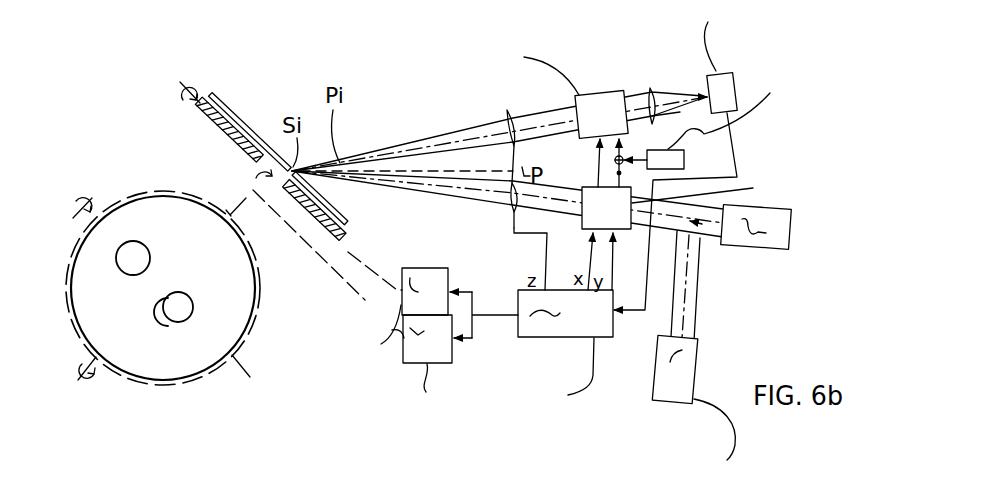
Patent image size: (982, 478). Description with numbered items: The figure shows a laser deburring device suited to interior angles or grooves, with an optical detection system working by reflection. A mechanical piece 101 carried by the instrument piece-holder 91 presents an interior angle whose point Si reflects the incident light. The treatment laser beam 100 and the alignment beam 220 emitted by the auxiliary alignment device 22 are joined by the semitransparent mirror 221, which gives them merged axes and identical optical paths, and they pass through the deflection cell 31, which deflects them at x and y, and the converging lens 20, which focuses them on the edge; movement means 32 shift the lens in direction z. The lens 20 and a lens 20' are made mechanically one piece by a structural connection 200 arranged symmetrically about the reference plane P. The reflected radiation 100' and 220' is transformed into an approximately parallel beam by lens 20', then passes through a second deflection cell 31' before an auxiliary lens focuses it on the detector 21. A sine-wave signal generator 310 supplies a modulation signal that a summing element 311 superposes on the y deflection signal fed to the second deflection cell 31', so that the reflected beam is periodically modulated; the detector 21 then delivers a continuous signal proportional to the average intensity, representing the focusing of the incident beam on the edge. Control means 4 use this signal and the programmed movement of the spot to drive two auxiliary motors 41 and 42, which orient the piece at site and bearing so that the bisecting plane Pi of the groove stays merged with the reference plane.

The instrument piece-holder 91 is at (165, 190).
The mechanical piece 101 is at (230, 106).
The laser treatment beam 100 is at (507, 204).
The reflected radiation 100' is at (499, 131).
The reflected alignment radiation 220' is at (666, 114).
The converging lens 20 is at (494, 210).
The lens 20' is at (507, 112).
The structural connection 200 is at (517, 152).
The movement means 32 is at (513, 259).
The deflection cell 31 is at (731, 203).
The second deflection cell 31' is at (544, 76).
The summing element 311 is at (630, 159).
The sine-wave signal generator 310 is at (752, 126).
The detector 21 is at (731, 74).
The semitransparent mirror 221 is at (699, 238).
The alignment beam 220 is at (707, 286).
The auxiliary alignment device 22 is at (623, 406).
The control means 4 is at (542, 346).
The auxiliary motor 41 is at (367, 319).
The auxiliary motor 42 is at (392, 375).